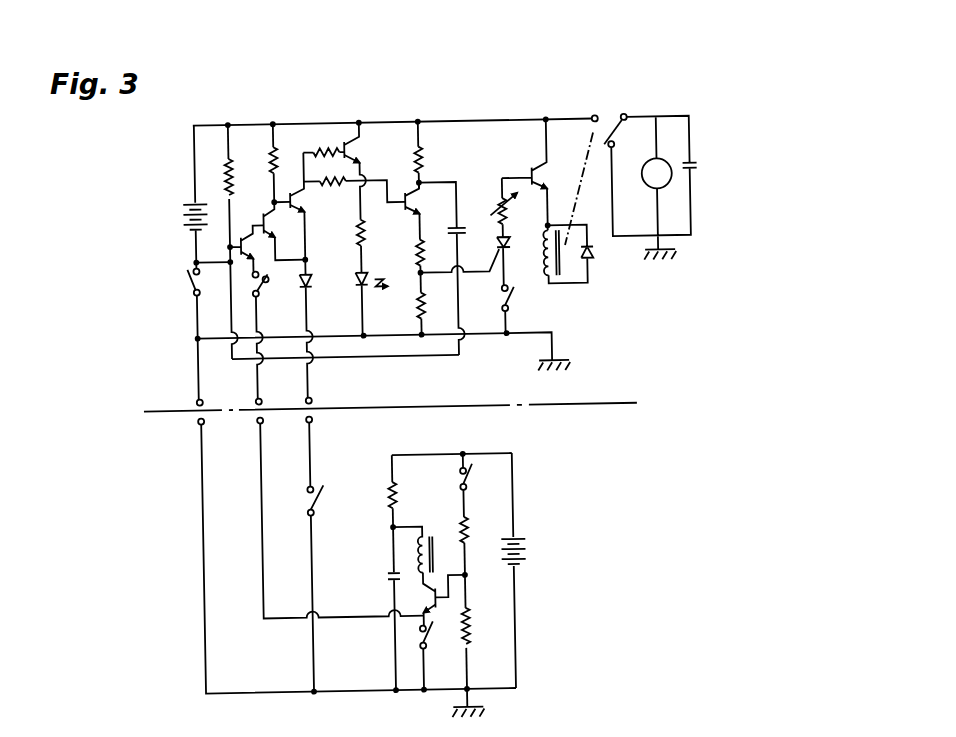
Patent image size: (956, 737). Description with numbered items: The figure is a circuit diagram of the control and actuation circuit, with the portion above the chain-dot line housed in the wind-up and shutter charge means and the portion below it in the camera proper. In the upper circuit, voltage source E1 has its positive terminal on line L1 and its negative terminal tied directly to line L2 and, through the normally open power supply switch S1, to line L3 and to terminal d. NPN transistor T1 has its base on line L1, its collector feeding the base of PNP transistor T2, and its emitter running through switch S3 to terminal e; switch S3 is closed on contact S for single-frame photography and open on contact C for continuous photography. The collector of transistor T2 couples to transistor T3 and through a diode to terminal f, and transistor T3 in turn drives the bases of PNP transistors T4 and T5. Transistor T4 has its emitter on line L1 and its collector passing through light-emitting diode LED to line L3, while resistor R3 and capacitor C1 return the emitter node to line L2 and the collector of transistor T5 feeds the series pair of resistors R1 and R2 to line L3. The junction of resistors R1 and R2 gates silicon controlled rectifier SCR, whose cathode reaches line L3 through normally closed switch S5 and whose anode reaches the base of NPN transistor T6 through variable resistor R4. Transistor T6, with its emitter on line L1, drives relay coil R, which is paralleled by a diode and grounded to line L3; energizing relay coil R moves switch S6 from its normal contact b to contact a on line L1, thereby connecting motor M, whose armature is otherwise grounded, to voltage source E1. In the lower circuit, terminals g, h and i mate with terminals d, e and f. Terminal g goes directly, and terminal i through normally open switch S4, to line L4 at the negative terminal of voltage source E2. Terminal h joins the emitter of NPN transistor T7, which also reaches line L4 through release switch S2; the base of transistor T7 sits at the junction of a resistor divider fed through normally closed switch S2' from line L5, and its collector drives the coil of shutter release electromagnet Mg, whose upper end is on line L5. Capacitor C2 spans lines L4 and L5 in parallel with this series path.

The line L1 is at (452, 122).
The line L2 is at (351, 356).
The line L3 is at (196, 336).
The line L4 is at (198, 560).
The line L5 is at (418, 455).
The voltage source E1 is at (192, 195).
The voltage source E2 is at (529, 570).
The power supply switch S1 is at (185, 332).
The contact s S is at (248, 282).
The contact c C is at (277, 285).
The selection switch S3 is at (273, 336).
The switch S4 is at (331, 557).
The switch S5 is at (521, 308).
The switch S6 is at (629, 129).
The release switch S2 is at (442, 655).
The switch S2' is at (479, 585).
The NPN transistor T1 is at (256, 248).
The PNP transistor T2 is at (284, 231).
The NPN transistor T3 is at (312, 207).
The PNP transistor T4 is at (347, 171).
The PNP transistor T5 is at (426, 211).
The NPN transistor T6 is at (540, 175).
The NPN transistor T7 is at (435, 599).
The resistor R1 is at (435, 266).
The resistor R2 is at (436, 313).
The resistor R3 is at (433, 155).
The variable resistor R4 is at (499, 208).
The relay coil R is at (564, 208).
The silicon controlled rectifier SCR is at (523, 253).
The capacitor C1 is at (456, 268).
The capacitor C2 is at (380, 629).
The light-emitting diode LED is at (382, 298).
The electromagnet Mg is at (432, 549).
The motor M is at (655, 188).
The contact a is at (594, 105).
The contact b is at (620, 154).
The terminal d is at (193, 401).
The terminal e is at (254, 400).
The terminal f is at (303, 398).
The terminal g is at (193, 431).
The terminal h is at (255, 429).
The terminal i is at (306, 429).